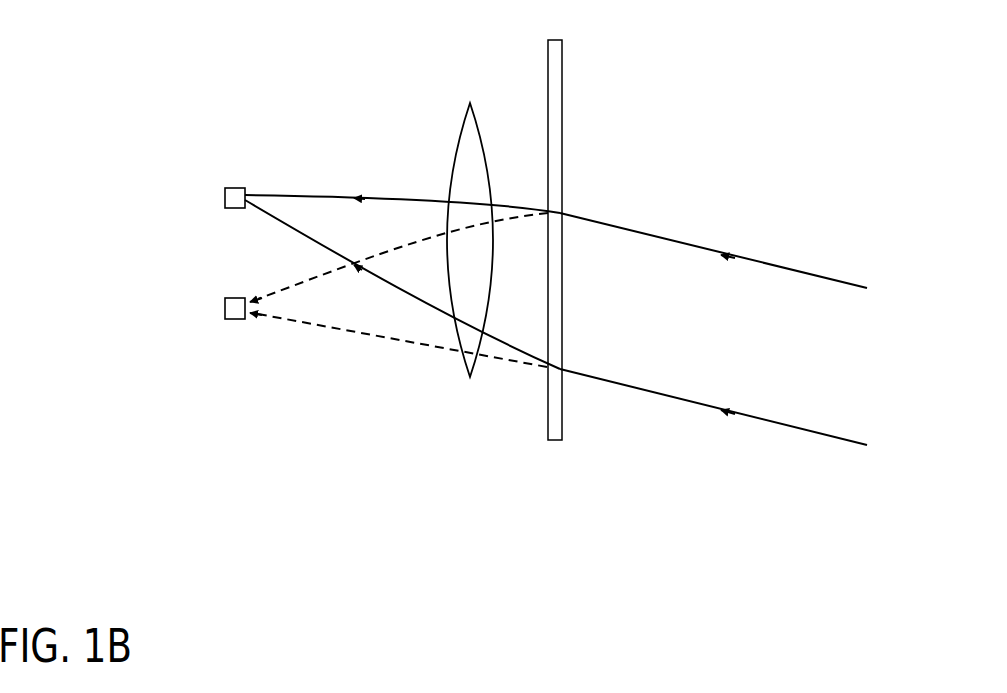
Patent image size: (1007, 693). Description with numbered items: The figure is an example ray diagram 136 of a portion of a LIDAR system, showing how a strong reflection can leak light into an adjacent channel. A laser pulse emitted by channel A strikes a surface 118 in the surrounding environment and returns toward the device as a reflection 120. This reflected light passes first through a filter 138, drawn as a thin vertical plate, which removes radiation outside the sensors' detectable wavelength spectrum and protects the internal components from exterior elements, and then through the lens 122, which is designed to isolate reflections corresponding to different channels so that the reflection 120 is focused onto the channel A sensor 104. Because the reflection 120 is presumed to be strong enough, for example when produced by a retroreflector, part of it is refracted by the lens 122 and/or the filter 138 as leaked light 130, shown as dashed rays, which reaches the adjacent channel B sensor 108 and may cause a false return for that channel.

The ray diagram 136 is at (167, 63).
The filter 138 is at (557, 42).
The reflection 120 is at (470, 103).
The channel A sensor 104 is at (235, 190).
The channel B sensor 108 is at (235, 300).
The lens 122 is at (318, 187).
The surface 118 is at (710, 263).
The leaked light 130 is at (343, 352).